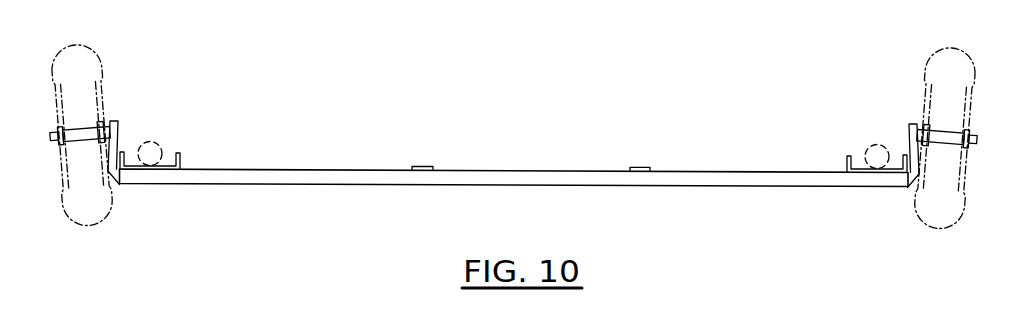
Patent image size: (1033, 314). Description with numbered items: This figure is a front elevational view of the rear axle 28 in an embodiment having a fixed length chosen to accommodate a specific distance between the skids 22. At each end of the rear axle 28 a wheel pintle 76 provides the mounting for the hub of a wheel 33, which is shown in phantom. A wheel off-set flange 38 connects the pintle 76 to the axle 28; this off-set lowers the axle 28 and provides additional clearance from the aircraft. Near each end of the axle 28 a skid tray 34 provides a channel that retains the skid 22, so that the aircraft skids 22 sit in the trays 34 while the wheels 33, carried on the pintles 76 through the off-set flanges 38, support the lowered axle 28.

The skid 22 is at (163, 138).
The rear axle 28 is at (372, 171).
The wheel 33 is at (95, 46).
The skid tray 34 is at (182, 154).
The wheel off-set flange 38 is at (118, 136).
The wheel pintle 76 is at (76, 128).